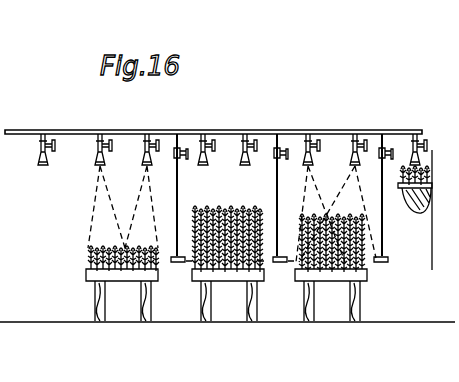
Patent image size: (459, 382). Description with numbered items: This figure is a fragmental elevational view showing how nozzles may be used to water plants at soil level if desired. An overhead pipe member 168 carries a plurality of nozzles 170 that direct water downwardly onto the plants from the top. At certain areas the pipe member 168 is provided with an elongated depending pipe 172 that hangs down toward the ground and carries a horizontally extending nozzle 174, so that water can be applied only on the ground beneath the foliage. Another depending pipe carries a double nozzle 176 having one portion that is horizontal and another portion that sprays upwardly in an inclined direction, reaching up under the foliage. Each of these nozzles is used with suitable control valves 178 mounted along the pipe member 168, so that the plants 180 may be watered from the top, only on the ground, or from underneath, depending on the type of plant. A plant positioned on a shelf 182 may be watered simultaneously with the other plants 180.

The pipe member 168 is at (166, 131).
The nozzle 170 is at (96, 164).
The elongated depending pipe 172 is at (180, 204).
The horizontally extending nozzle 174 is at (181, 264).
The double nozzle 176 is at (282, 264).
The control valve 178 is at (316, 141).
The plant 180 is at (87, 263).
The plant positioned on a shelf 182 is at (419, 204).